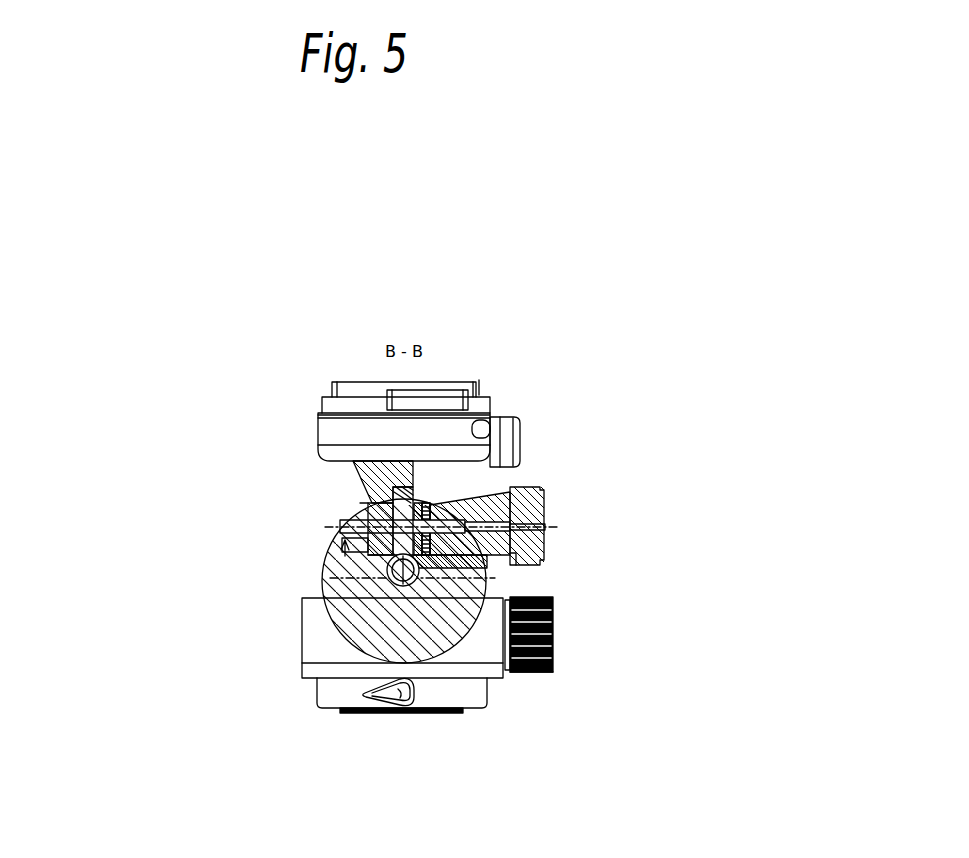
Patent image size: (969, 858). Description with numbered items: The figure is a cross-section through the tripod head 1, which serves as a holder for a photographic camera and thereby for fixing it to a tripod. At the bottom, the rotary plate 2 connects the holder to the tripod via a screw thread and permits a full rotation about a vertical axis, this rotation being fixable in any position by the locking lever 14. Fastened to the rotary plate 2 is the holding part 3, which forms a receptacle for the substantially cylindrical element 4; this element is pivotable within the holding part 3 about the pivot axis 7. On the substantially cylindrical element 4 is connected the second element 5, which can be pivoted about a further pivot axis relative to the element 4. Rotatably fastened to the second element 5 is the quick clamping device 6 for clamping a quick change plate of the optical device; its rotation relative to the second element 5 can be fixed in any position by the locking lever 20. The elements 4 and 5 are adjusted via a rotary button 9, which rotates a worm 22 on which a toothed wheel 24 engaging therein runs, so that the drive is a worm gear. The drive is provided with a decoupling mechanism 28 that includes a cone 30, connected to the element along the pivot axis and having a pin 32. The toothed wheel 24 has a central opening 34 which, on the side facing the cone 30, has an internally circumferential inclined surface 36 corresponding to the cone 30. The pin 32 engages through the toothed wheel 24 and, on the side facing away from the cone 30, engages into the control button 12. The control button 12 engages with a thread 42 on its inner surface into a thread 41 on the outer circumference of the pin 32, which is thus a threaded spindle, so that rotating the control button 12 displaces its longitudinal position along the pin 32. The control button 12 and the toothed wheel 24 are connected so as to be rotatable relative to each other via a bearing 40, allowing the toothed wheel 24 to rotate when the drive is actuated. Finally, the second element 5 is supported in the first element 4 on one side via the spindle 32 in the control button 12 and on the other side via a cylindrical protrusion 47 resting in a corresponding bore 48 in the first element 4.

The tripod head 1 is at (562, 223).
The rotary plate 2 is at (325, 711).
The holding part 3 is at (323, 653).
The substantially cylindrical element 4 is at (327, 552).
The second element 5 is at (360, 478).
The quick clamping device 6 is at (477, 373).
The pivot axis 7 is at (327, 577).
The rotary button 9 is at (560, 627).
The control button 12 is at (550, 512).
The locking lever 14 is at (409, 705).
The locking lever 20 is at (522, 428).
The worm 22 is at (410, 584).
The toothed wheel 24 is at (545, 568).
The decoupling mechanism 28 is at (451, 487).
The cone 30 is at (362, 501).
The pin 32 is at (445, 532).
The central opening 34 is at (418, 496).
The inclined surface 36 is at (413, 493).
The bearing 40 is at (517, 672).
The thread 41 is at (492, 521).
The thread 42 is at (426, 529).
The cylindrical protrusion 47 is at (340, 528).
The bore 48 is at (330, 572).